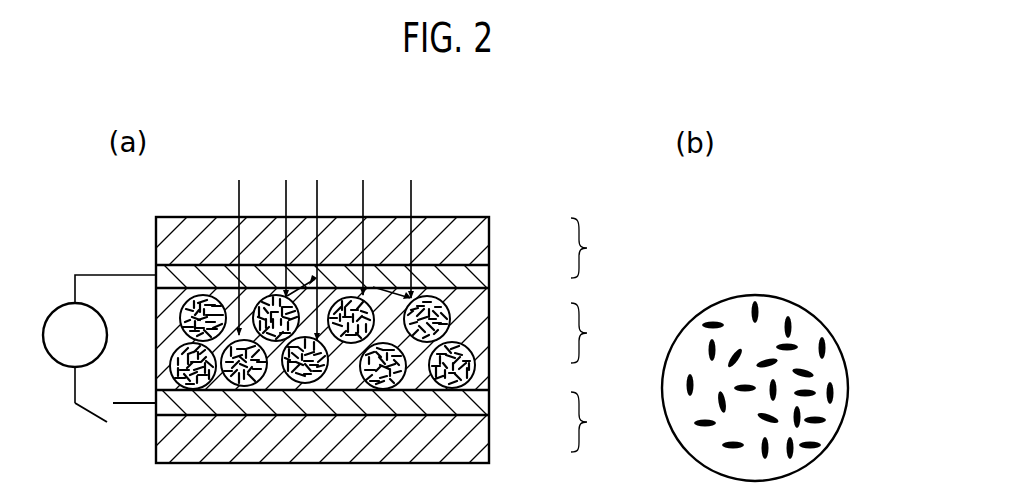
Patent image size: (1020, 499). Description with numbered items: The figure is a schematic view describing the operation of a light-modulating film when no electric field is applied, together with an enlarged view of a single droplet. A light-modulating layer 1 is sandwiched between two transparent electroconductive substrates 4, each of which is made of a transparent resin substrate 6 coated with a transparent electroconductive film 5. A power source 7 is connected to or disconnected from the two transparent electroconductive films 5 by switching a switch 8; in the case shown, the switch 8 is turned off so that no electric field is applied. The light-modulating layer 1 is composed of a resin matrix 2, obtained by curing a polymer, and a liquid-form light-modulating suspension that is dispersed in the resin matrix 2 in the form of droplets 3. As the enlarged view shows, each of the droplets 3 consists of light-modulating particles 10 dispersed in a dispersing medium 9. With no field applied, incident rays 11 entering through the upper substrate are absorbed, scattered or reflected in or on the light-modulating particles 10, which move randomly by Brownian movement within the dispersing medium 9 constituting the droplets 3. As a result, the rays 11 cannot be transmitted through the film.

The light-modulating layer 1 is at (589, 333).
The resin matrix 2 is at (489, 323).
The droplets 3 is at (489, 363).
The transparent electroconductive substrate 4 is at (590, 335).
The transparent electroconductive film 5 is at (489, 287).
The transparent resin substrate 6 is at (489, 240).
The power source 7 is at (55, 307).
The switch 8 is at (92, 415).
The dispersing medium 9 is at (795, 318).
The light-modulating particles 10 is at (820, 422).
The incident rays 11 is at (411, 198).